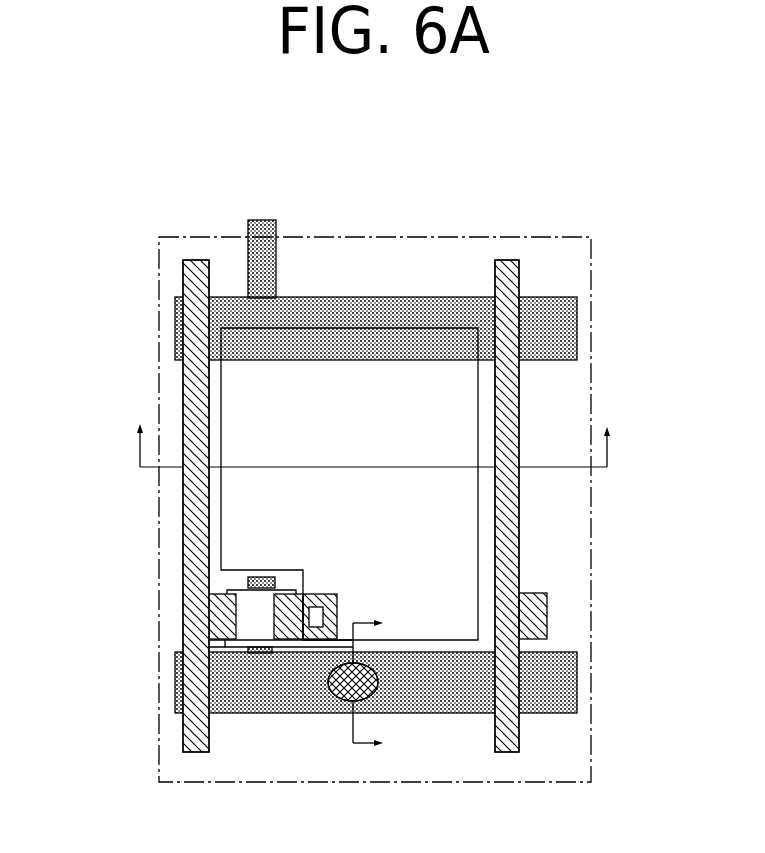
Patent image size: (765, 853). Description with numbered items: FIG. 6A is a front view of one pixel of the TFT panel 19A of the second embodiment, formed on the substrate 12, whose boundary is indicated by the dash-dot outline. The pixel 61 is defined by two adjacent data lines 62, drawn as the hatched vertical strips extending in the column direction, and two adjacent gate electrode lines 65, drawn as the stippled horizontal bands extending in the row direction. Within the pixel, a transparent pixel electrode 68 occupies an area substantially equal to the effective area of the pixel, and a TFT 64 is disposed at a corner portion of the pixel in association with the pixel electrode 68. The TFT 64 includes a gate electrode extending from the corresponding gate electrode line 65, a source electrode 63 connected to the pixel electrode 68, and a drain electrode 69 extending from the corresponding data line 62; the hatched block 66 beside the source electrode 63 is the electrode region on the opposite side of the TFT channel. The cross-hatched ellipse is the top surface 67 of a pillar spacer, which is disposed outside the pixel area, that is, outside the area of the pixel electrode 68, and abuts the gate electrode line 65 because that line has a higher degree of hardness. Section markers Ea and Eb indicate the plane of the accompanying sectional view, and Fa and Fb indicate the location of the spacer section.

The array substrate / TFT substrate 19A is at (589, 163).
The substrate 12 is at (593, 282).
The pixel 61 is at (140, 357).
The data line 62 is at (513, 375).
The source electrode 63 is at (250, 620).
The TFT 64 is at (288, 578).
The gate electrode line 65 is at (383, 297).
The drain electrode 66 is at (285, 626).
The top surface 67 is at (340, 700).
The pixel electrode 68 is at (457, 430).
The drain electrode 69 is at (222, 641).